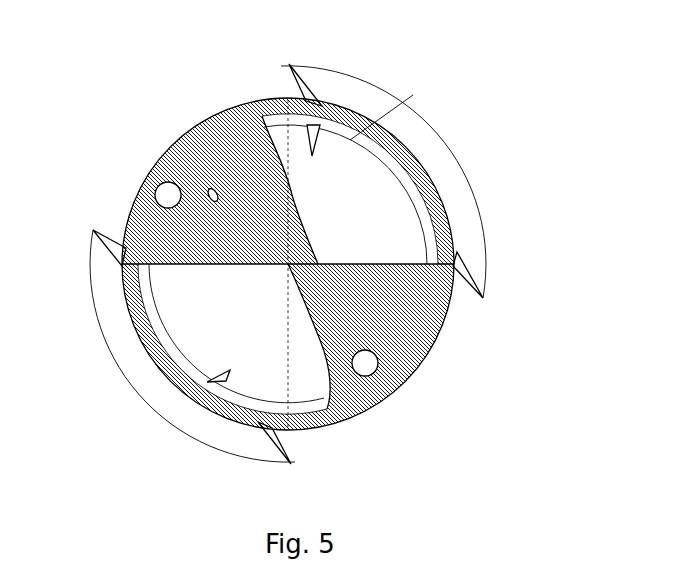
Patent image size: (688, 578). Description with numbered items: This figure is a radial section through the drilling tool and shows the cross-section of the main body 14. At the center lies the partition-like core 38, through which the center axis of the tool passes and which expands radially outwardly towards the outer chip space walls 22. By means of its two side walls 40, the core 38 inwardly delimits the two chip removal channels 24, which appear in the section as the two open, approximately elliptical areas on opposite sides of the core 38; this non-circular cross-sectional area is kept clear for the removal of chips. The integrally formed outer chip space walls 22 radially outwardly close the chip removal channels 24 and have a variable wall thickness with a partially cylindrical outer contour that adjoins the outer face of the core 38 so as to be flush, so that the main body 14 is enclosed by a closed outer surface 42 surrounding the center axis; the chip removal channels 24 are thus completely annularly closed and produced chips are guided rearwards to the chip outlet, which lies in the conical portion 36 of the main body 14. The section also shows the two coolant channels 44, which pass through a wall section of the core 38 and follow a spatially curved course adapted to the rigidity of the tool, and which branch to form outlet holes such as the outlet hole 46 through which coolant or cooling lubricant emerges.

The main body 14 is at (470, 192).
The outer chip space wall 22 is at (413, 95).
The chip removal channel 24 is at (312, 156).
The conical portion 36 is at (103, 268).
The core 38 is at (378, 305).
The side wall 40 is at (317, 240).
The outer surface 42 is at (458, 252).
The coolant channel 44 is at (167, 183).
The outlet hole 46 is at (215, 188).